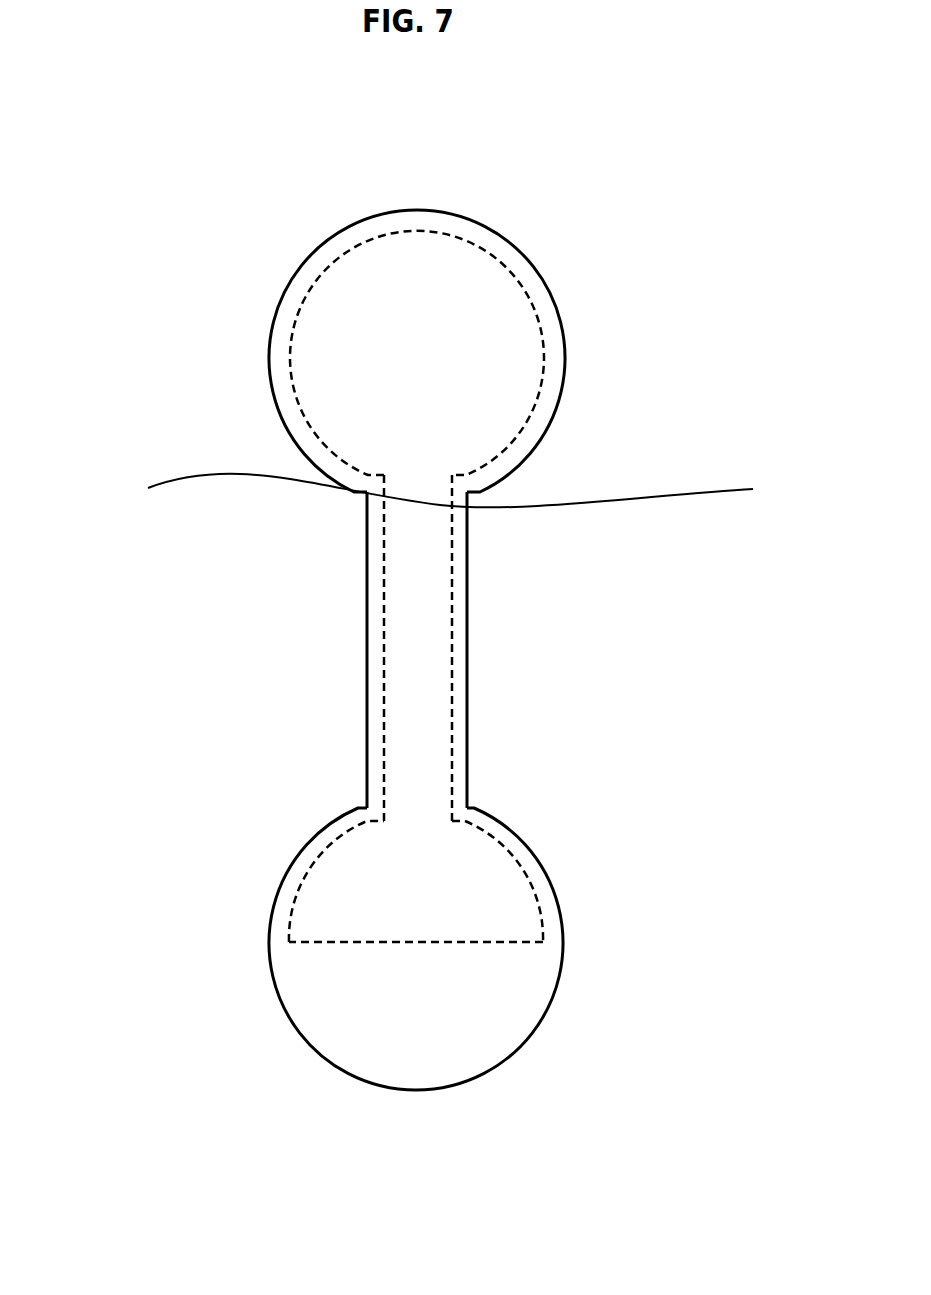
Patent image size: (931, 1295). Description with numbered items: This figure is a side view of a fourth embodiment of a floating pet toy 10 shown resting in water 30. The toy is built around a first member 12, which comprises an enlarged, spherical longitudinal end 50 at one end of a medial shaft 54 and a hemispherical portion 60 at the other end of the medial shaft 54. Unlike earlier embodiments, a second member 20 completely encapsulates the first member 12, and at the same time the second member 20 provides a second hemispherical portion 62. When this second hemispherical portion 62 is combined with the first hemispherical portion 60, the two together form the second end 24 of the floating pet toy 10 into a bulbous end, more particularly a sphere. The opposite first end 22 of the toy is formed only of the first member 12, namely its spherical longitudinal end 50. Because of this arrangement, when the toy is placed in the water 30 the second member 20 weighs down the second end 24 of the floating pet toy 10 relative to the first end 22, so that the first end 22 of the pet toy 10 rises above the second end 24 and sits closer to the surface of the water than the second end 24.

The floating pet toy 10 is at (183, 252).
The first member 12 is at (511, 270).
The second member 20 is at (506, 812).
The first end 22 is at (406, 177).
The second end 24 is at (387, 1105).
The water 30 is at (450, 502).
The spherical longitudinal end 50 is at (368, 367).
The medial shaft 54 is at (402, 632).
The spherical portion 60 is at (385, 850).
The second spherical portion 62 is at (342, 1005).